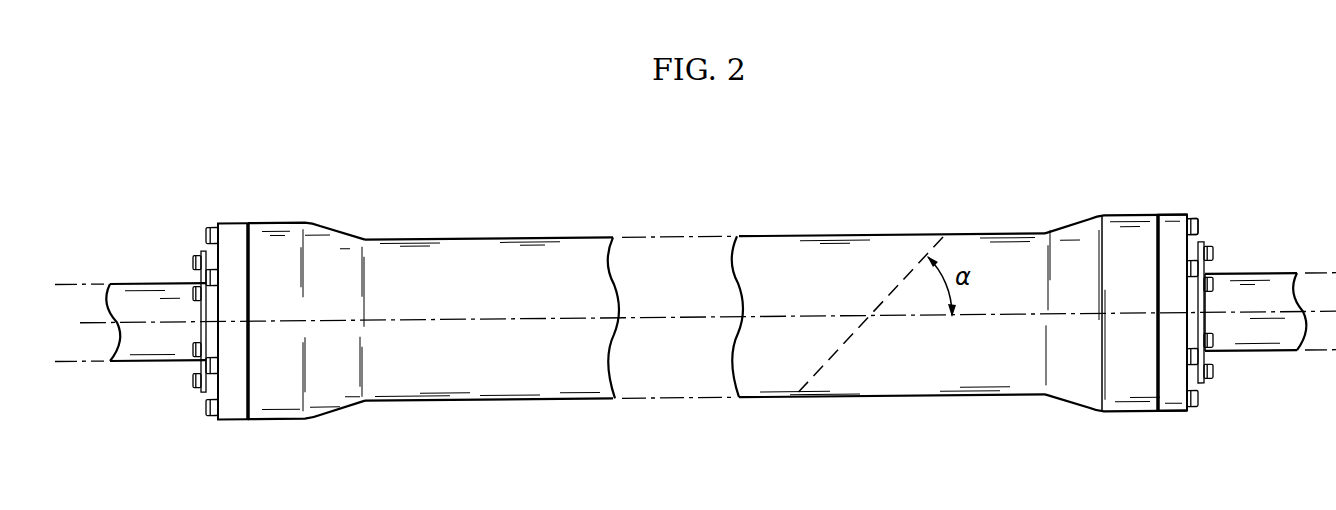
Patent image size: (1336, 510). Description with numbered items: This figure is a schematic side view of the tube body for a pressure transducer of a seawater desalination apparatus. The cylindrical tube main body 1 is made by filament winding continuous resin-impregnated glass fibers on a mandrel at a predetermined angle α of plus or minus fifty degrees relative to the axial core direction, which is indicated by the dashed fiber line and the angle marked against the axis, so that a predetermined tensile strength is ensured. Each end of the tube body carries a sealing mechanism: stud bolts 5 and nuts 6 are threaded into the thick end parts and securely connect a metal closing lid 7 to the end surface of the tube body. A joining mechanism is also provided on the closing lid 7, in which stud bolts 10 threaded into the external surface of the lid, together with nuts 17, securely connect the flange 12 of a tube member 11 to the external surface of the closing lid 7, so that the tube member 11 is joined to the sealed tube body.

The tube main body 1 is at (787, 240).
The stud bolts 5 is at (1199, 229).
The nuts 6 is at (1191, 231).
The closing lid 7 is at (1172, 223).
The stud bolts 10 is at (1213, 259).
The tube member 11 is at (1268, 337).
The flange 12 is at (1203, 321).
The nuts 17 is at (1212, 252).